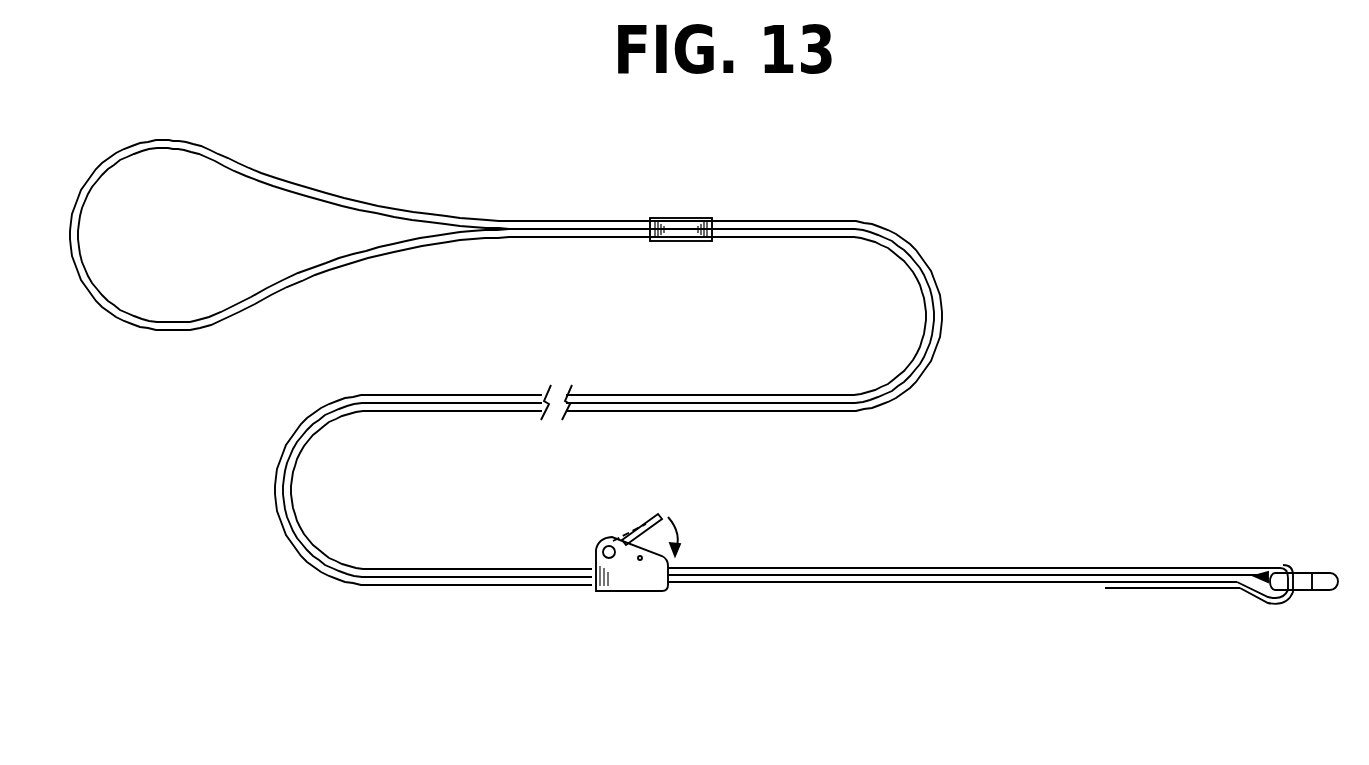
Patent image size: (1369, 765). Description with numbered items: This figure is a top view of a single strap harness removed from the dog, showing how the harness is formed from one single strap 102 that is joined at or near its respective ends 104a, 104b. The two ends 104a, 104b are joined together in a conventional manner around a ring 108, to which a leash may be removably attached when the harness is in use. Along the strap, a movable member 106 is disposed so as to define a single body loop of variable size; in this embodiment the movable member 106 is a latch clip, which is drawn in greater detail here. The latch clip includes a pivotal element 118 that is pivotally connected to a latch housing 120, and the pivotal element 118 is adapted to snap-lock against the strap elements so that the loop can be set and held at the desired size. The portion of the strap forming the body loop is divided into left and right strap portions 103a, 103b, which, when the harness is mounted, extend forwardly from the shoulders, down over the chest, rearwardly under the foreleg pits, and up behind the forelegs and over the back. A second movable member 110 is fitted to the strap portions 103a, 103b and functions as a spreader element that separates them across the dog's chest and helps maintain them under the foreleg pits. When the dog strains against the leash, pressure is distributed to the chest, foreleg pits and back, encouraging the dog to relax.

The single strap 102 is at (711, 409).
The left strap portion 103a is at (895, 582).
The right strap portion 103b is at (1060, 568).
The strap end 104a is at (1275, 570).
The strap end 104b is at (1107, 587).
The movable member 106 is at (635, 563).
The ring 108 is at (1327, 590).
The second movable member 110 is at (688, 227).
The pivotal element 118 is at (641, 520).
The latch housing 120 is at (658, 575).